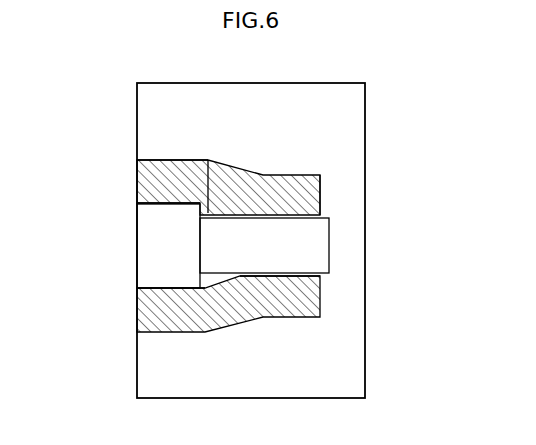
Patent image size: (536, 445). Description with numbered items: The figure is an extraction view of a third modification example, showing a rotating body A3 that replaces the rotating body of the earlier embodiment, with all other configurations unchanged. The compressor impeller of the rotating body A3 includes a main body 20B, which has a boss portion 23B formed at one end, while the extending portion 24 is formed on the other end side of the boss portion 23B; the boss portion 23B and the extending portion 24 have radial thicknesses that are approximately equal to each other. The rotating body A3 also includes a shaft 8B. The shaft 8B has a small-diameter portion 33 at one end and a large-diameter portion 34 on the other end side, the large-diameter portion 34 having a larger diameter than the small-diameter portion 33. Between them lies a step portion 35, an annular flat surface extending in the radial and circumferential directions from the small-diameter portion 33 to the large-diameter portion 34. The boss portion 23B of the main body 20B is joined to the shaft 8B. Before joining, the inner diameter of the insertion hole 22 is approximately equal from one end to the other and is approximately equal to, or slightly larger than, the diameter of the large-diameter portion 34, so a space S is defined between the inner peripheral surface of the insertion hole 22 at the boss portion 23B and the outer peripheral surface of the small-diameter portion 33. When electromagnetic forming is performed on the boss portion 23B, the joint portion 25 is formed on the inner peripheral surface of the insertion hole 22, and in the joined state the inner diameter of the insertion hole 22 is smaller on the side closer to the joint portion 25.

The rotating body A3 is at (187, 138).
The boss portion 23B is at (285, 172).
The main body 20B is at (173, 332).
The step portion 35 is at (208, 160).
The shaft 8B is at (155, 241).
The space S is at (205, 213).
The extending portion 24 is at (152, 160).
The large-diameter portion 34 is at (152, 203).
The insertion hole 22 is at (157, 288).
The small-diameter portion 33 is at (316, 214).
The joint portion 25 is at (296, 267).